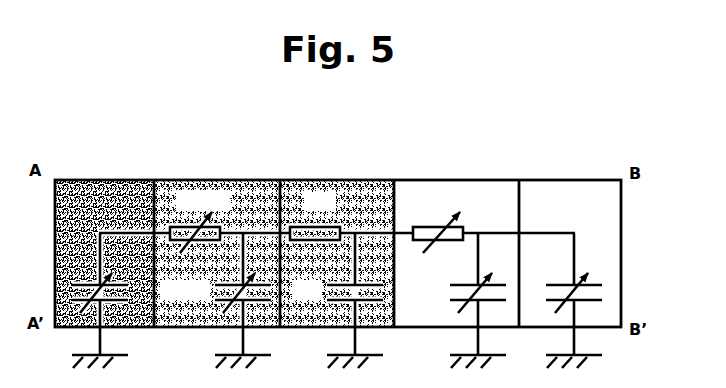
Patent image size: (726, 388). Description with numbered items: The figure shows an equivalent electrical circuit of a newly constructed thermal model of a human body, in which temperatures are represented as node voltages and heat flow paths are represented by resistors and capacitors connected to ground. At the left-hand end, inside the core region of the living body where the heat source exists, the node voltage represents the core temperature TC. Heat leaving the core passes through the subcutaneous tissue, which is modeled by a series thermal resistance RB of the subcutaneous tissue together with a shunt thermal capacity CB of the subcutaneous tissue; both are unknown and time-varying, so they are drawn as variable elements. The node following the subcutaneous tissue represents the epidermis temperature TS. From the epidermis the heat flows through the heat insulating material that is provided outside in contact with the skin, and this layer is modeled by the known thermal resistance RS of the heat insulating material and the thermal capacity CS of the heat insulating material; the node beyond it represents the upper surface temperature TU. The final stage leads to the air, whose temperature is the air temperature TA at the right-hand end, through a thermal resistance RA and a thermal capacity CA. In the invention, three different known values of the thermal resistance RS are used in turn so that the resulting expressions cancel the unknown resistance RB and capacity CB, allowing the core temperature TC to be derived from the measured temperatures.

The core temperature TC is at (168, 158).
The epidermis temperature TS is at (290, 158).
The upper surface temperature TU is at (407, 158).
The air temperature TA is at (532, 158).
The thermal resistance of the subcutaneous tissue RB is at (195, 222).
The thermal resistance of the heat insulating material RS is at (315, 216).
The thermal resistance RA is at (438, 222).
The thermal capacity of the subcutaneous tissue CB is at (217, 300).
The thermal capacity of the heat insulating material CS is at (339, 300).
The thermal capacity CA is at (453, 300).